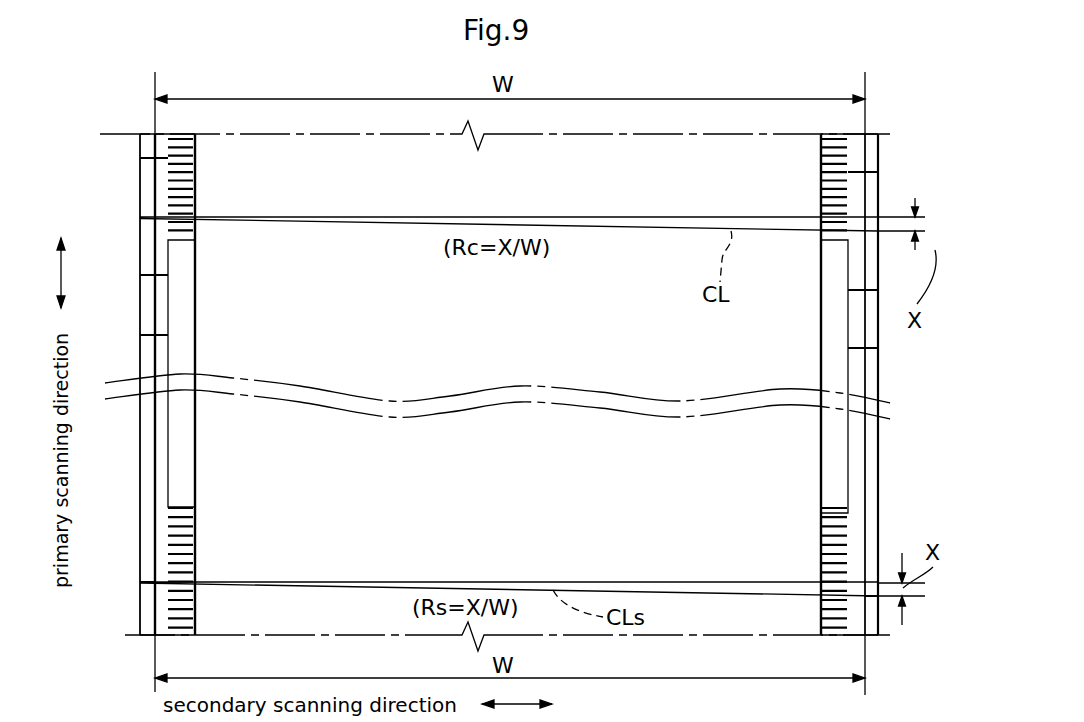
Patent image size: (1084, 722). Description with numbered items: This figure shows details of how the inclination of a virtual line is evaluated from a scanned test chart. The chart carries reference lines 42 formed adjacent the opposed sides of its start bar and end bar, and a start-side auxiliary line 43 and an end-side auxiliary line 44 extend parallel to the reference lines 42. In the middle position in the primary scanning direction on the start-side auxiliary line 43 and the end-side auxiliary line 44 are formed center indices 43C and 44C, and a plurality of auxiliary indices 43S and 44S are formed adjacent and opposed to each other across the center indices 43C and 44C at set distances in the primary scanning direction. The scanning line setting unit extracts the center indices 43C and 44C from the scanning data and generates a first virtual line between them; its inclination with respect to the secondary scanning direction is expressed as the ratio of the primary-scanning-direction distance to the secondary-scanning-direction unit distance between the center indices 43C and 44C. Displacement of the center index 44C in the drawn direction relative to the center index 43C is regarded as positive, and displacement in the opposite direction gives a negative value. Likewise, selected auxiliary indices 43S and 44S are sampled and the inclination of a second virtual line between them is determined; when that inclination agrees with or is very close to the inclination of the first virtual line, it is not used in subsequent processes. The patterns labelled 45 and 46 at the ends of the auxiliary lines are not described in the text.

The reference line 42 is at (140, 200).
The start-side auxiliary line 43 is at (140, 363).
The center index 43C is at (160, 223).
The auxiliary index 43S is at (147, 157).
The end-side auxiliary line 44 is at (866, 367).
The center index 44C is at (870, 233).
The auxiliary index 44S is at (862, 172).
The first reference pattern 45 is at (183, 130).
The second reference pattern 46 is at (836, 130).